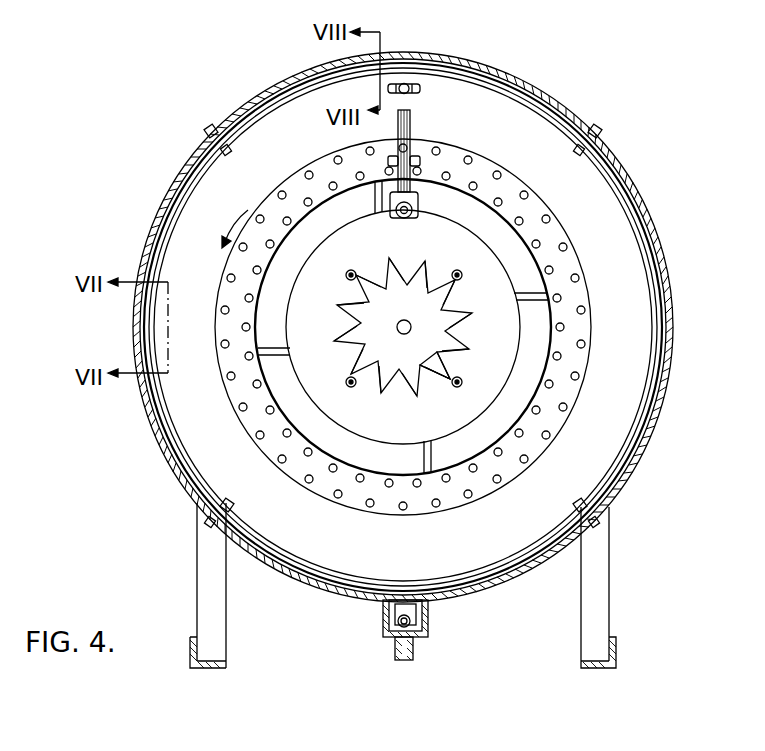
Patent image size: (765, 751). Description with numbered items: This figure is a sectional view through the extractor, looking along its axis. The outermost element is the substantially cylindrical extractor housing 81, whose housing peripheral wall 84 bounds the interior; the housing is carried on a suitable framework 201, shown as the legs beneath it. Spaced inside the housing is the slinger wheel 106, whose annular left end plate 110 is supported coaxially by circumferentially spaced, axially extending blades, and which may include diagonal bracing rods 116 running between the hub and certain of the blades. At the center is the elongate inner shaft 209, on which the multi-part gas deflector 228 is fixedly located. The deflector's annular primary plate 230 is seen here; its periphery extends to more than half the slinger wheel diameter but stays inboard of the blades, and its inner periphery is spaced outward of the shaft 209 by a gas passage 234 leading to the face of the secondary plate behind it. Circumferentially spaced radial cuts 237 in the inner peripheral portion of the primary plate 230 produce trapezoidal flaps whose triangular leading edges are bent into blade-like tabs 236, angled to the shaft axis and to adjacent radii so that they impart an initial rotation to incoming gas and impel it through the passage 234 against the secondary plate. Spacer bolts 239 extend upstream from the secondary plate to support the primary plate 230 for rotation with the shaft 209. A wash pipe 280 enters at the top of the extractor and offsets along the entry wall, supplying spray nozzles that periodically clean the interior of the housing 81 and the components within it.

The extractor housing 81 is at (482, 24).
The housing peripheral wall 84 is at (511, 66).
The wash pipe 280 is at (412, 122).
The slinger wheel 106 is at (576, 249).
The diagonal bracing rods 116 is at (537, 299).
The annular left end plate 110 is at (578, 321).
The gas deflector 228 is at (501, 398).
The primary plate 230 is at (479, 241).
The spacer bolts 239 is at (347, 272).
The radial cuts 237 is at (433, 350).
The gas passage 234 is at (449, 324).
The blade-like tabs 236 is at (444, 373).
The inner shaft 209 is at (428, 300).
The framework 201 is at (623, 601).